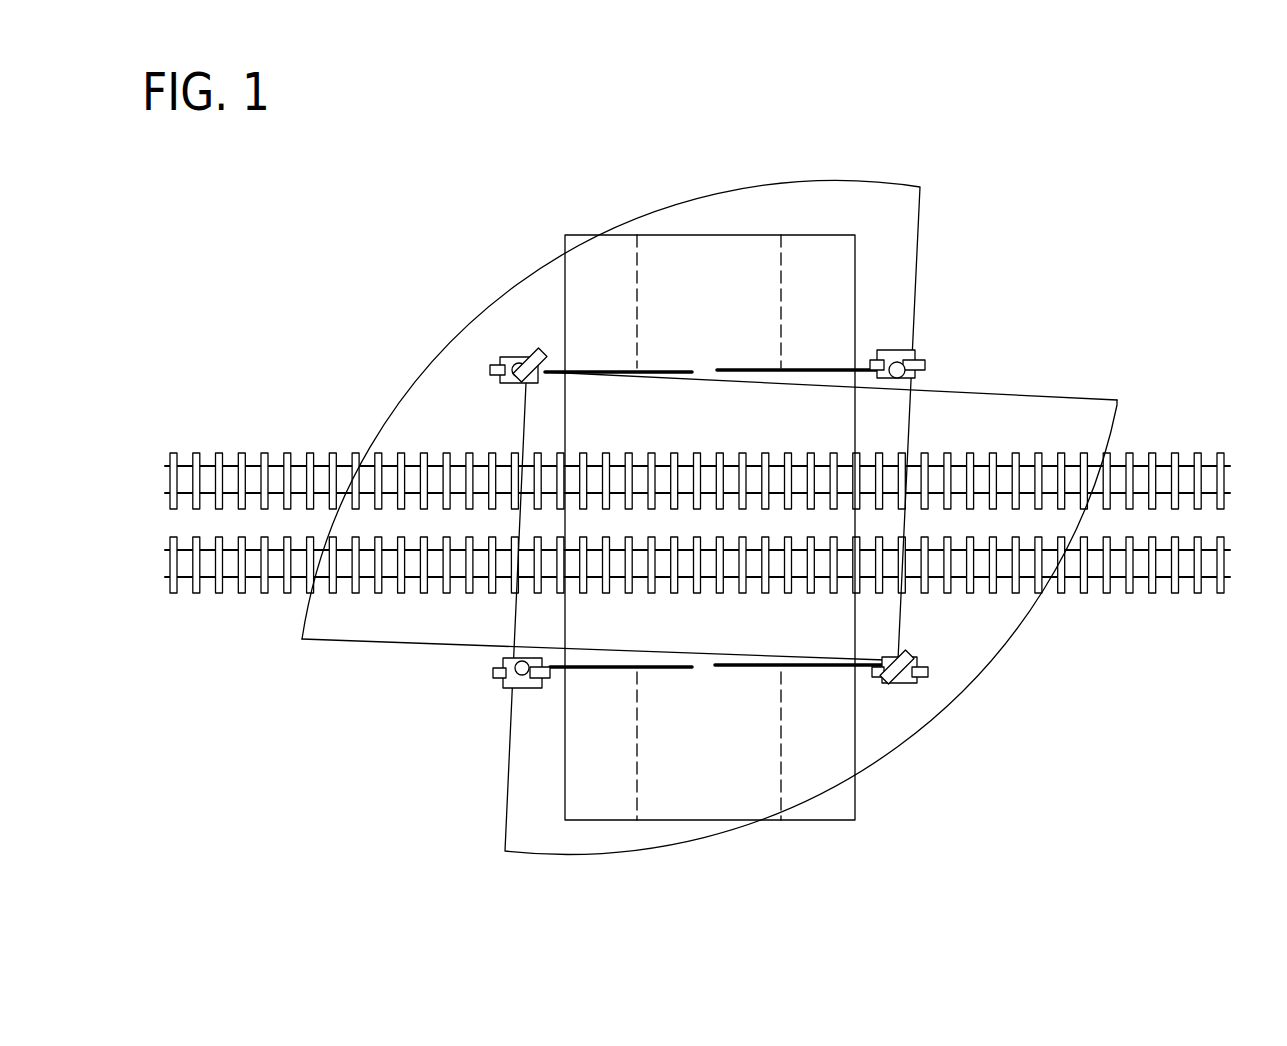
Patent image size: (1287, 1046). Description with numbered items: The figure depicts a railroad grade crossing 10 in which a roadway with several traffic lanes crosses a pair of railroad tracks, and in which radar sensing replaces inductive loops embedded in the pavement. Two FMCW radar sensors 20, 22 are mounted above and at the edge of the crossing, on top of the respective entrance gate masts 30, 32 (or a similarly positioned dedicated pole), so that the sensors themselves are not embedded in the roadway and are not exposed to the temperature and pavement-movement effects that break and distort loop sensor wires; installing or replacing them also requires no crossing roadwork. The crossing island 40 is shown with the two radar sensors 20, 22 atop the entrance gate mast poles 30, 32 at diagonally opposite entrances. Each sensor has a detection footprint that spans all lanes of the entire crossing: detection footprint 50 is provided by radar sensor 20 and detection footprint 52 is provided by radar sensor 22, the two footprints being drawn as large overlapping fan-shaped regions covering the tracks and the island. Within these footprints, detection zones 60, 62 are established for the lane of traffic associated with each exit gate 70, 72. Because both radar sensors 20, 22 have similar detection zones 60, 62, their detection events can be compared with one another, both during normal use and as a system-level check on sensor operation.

The railroad grade crossing 10 is at (1098, 182).
The radar sensor 20 is at (452, 359).
The radar sensor 22 is at (963, 708).
The entrance gate mast 30 is at (497, 376).
The entrance gate mast 32 is at (917, 690).
The crossing island 40 is at (494, 662).
The detection footprint 50 is at (875, 767).
The detection footprint 52 is at (778, 183).
The detection zone 60 is at (584, 413).
The detection zone 62 is at (768, 622).
The exit gate 70 is at (586, 672).
The exit gate 72 is at (813, 370).